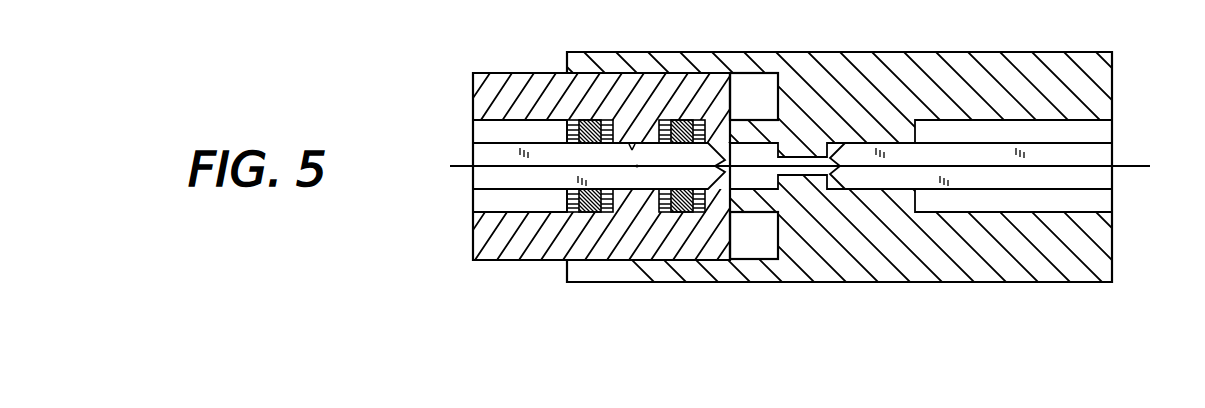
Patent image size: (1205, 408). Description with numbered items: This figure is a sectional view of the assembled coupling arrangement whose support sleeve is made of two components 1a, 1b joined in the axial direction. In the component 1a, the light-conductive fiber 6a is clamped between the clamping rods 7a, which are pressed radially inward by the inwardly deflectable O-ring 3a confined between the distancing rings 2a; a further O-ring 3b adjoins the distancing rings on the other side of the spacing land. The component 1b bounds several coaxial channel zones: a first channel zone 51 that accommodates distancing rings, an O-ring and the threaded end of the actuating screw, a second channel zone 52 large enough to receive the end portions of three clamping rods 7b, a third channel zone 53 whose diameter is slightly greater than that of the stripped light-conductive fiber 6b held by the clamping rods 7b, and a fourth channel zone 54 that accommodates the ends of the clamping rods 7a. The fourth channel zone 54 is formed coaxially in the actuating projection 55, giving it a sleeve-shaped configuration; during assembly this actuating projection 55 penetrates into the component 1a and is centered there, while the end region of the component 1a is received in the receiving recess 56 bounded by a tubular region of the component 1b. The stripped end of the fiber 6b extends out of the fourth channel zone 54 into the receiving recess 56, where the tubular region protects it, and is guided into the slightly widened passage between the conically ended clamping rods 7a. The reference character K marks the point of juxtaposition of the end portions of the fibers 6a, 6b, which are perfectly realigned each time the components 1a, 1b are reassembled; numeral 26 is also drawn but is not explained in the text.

The support sleeve component 1a is at (517, 93).
The support sleeve component 1b is at (907, 70).
The distancing ring 2a is at (578, 120).
The O-ring 3a is at (590, 213).
The O-ring 3b is at (673, 217).
The sealing ring 26 is at (670, 123).
The light-conductive fiber 6a is at (448, 166).
The light-conductive fiber 6b is at (1140, 166).
The clamping rods 7a is at (513, 177).
The clamping rods 7b is at (1068, 180).
The first channel zone 51 is at (995, 137).
The second channel zone 52 is at (900, 190).
The third channel zone 53 is at (808, 173).
The fourth channel zone 54 is at (758, 155).
The actuating projection 55 is at (753, 205).
The receiving recess 56 is at (765, 73).
The point of juxtaposition K is at (633, 150).